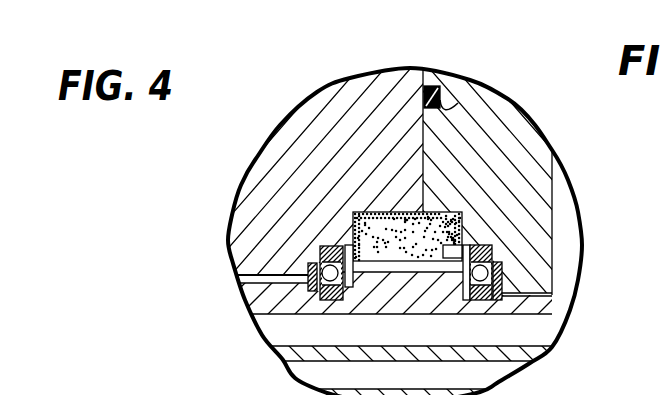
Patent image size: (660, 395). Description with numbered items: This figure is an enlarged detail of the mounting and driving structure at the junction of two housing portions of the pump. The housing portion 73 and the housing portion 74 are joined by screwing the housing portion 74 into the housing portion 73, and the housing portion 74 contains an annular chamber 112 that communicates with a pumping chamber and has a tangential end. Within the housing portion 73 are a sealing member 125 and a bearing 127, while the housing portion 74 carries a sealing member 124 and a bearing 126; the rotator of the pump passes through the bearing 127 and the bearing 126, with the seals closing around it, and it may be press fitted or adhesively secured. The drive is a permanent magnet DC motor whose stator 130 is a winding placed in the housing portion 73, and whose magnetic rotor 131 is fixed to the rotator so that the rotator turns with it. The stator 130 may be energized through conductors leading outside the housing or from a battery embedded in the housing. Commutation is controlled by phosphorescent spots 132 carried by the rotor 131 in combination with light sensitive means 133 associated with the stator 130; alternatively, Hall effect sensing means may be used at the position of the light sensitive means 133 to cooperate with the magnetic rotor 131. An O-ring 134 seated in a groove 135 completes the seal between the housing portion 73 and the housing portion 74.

The housing portion 73 is at (298, 112).
The housing portion 74 is at (503, 103).
The annular chamber 112 is at (566, 244).
The sealing member 124 is at (502, 281).
The sealing member 125 is at (306, 268).
The bearing 126 is at (486, 242).
The bearing 127 is at (327, 244).
The stator 130 is at (443, 212).
The magnetic rotor 131 is at (417, 298).
The phosphorescent spots 132 is at (455, 290).
The light sensitive means 133 is at (468, 225).
The O-ring 134 is at (443, 97).
The groove 135 is at (452, 106).